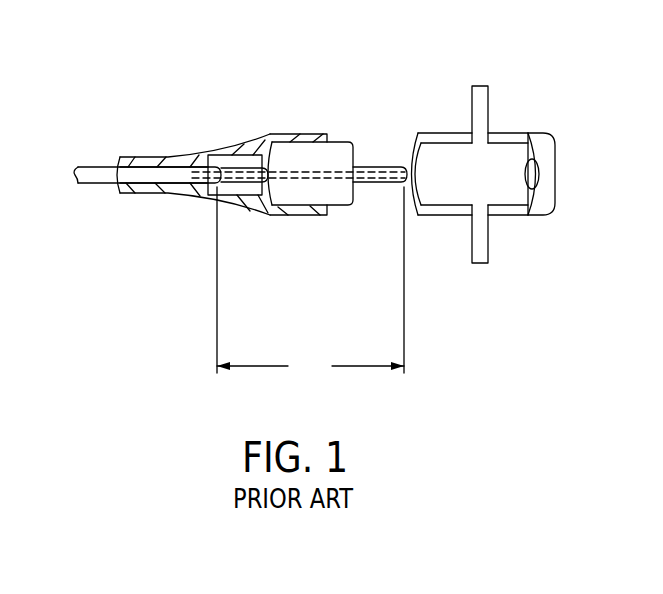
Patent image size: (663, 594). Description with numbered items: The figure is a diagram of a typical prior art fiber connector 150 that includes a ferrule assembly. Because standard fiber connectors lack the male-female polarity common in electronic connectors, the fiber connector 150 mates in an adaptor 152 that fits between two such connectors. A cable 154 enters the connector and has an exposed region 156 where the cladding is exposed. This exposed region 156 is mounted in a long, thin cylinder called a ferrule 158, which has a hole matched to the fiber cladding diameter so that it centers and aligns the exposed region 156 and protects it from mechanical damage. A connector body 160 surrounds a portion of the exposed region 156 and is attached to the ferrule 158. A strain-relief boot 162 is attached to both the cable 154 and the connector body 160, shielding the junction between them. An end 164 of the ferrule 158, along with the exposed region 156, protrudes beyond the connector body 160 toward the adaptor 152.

The fiber connector 150 is at (176, 243).
The adaptor 152 is at (489, 76).
The cable 154 is at (85, 168).
The exposed region 156 is at (310, 284).
The ferrule 158 is at (363, 167).
The connector body 160 is at (305, 198).
The strain-relief boot 162 is at (222, 137).
The end of the ferrule 164 is at (405, 167).